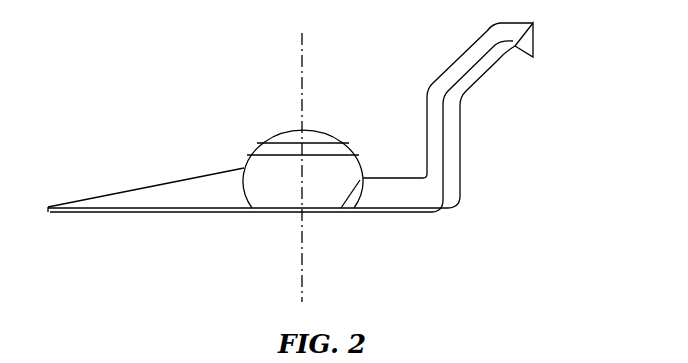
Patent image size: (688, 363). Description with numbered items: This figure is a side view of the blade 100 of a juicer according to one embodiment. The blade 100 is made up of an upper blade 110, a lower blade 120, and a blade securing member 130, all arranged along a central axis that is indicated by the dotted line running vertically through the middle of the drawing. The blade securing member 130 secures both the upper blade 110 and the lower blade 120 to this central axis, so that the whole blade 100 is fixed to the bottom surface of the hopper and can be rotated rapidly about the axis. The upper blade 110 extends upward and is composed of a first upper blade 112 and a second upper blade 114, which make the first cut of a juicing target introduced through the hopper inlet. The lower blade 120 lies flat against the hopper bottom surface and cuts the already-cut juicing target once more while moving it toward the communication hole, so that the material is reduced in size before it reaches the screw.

The blade 100 is at (319, 160).
The upper blade 110 is at (477, 117).
The first upper blade 112 is at (443, 130).
The second upper blade 114 is at (483, 71).
The lower blade 120 is at (173, 185).
The blade securing member 130 is at (337, 137).